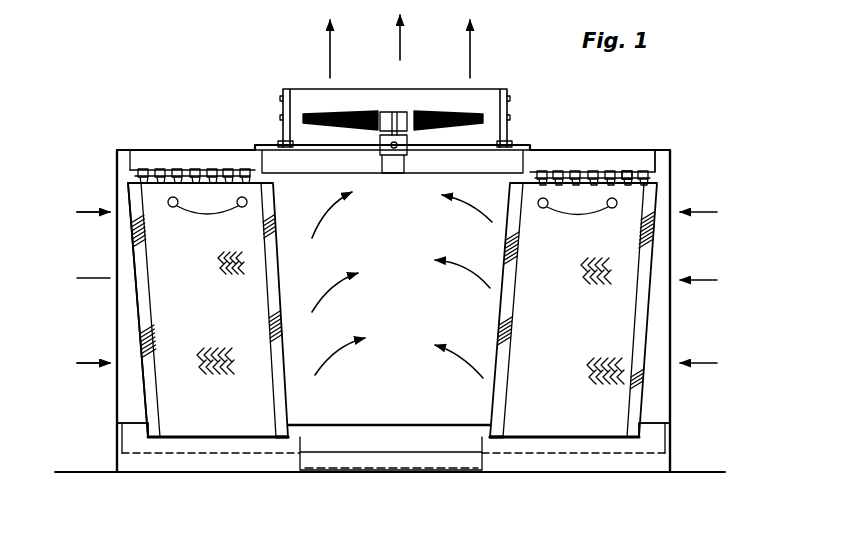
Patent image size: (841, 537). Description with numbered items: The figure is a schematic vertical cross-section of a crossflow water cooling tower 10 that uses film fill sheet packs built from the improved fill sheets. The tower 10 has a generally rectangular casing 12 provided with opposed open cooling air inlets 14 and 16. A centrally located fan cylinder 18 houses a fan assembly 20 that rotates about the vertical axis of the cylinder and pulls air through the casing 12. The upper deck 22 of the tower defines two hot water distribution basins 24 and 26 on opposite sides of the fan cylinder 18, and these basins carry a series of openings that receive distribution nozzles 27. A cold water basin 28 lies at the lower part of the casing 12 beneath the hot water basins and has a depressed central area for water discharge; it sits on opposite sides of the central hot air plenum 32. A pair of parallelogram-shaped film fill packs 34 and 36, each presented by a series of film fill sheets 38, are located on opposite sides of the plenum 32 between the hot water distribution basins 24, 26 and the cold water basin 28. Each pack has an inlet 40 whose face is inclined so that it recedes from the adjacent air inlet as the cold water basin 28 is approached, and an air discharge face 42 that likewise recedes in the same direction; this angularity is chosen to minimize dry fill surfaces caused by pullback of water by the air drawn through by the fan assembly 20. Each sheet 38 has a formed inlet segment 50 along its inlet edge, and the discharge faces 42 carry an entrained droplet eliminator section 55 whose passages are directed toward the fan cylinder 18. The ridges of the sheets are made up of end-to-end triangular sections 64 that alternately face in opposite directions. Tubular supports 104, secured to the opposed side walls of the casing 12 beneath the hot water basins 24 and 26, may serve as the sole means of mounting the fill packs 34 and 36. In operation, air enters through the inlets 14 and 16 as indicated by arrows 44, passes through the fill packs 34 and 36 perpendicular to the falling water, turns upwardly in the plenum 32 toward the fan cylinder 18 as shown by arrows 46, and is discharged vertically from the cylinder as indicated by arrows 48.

The crossflow water cooling tower 10 is at (656, 112).
The casing 12 is at (277, 179).
The cooling air inlet 14 is at (111, 232).
The cooling air inlet 16 is at (663, 268).
The fan cylinder 18 is at (507, 101).
The fan assembly 20 is at (419, 100).
The upper deck 22 is at (587, 147).
The hot water distribution basin 24 is at (150, 169).
The hot water distribution basin 26 is at (619, 170).
The distribution nozzles 27 is at (208, 169).
The cold water basin 28 is at (352, 471).
The central hot air plenum 32 is at (395, 307).
The film fill pack 34 is at (137, 400).
The film fill pack 36 is at (654, 408).
The film fill sheet 38 is at (206, 440).
The inlet 40 is at (136, 314).
The air discharge face 42 is at (294, 269).
The arrows 44 is at (78, 279).
The arrows 46 is at (333, 312).
The arrows 48 is at (398, 44).
The inlet segment 50 is at (146, 423).
The entrained droplet eliminator section 55 is at (300, 409).
The triangular sections 64 is at (199, 366).
The tubular supports 104 is at (247, 203).